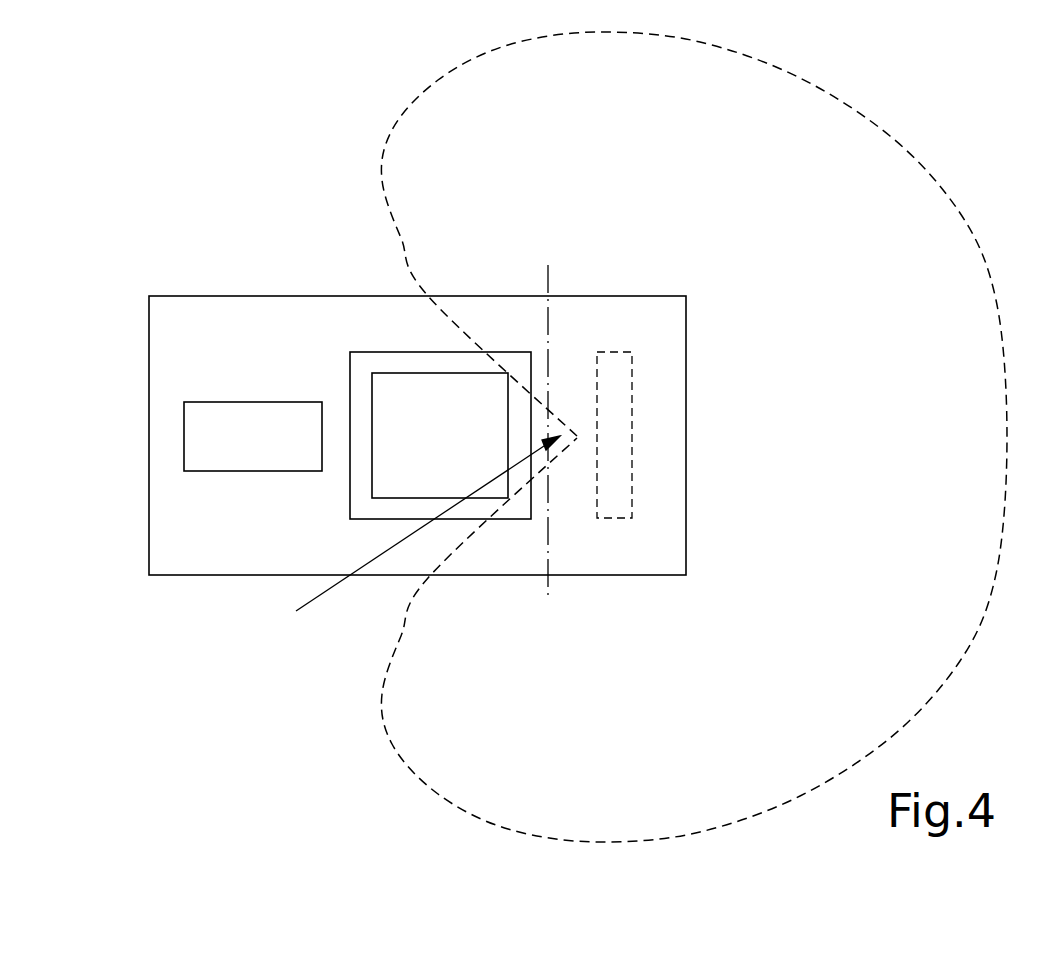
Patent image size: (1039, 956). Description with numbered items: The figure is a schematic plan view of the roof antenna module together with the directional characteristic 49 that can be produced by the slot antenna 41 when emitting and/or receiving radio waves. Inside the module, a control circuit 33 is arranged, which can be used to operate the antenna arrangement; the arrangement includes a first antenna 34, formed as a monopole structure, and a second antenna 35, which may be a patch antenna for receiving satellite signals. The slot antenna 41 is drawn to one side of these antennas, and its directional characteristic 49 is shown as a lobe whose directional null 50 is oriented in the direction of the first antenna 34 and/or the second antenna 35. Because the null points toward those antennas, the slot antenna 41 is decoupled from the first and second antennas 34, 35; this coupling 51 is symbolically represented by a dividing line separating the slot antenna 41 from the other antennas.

The control circuit 33 is at (220, 575).
The first antenna 34 is at (185, 435).
The second antenna 35 is at (371, 352).
The slot antenna 41 is at (632, 366).
The directional characteristic 49 is at (393, 130).
The directional null 50 is at (409, 535).
The coupling 51 is at (549, 538).